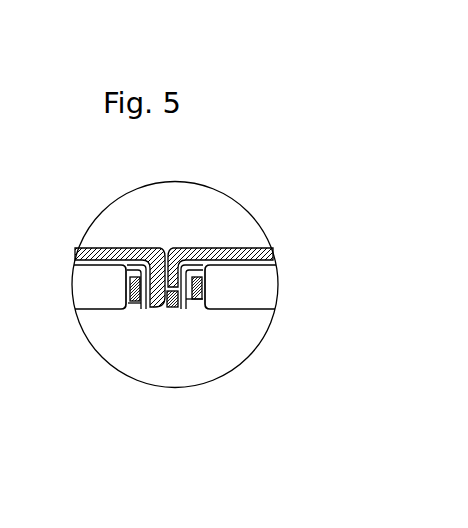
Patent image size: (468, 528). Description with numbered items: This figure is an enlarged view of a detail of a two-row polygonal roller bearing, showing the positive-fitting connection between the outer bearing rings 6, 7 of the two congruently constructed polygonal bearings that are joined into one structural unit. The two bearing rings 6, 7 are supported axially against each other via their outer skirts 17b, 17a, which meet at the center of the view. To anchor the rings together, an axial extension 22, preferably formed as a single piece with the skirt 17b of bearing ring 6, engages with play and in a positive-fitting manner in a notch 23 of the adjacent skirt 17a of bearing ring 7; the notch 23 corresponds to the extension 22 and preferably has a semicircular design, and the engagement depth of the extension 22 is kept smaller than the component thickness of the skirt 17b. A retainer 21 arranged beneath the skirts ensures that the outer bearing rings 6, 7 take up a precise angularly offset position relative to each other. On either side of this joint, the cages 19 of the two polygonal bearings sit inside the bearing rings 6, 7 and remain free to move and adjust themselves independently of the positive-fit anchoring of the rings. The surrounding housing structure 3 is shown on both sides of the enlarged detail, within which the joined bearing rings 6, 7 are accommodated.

The housing body 3 is at (88, 283).
The outer bearing ring 6 is at (77, 251).
The outer bearing ring 7 is at (274, 255).
The skirt 17a is at (171, 249).
The skirt 17b is at (162, 249).
The cage 19 is at (135, 302).
The retainer 21 is at (146, 335).
The axial extension 22 is at (180, 309).
The notch 23 is at (167, 309).